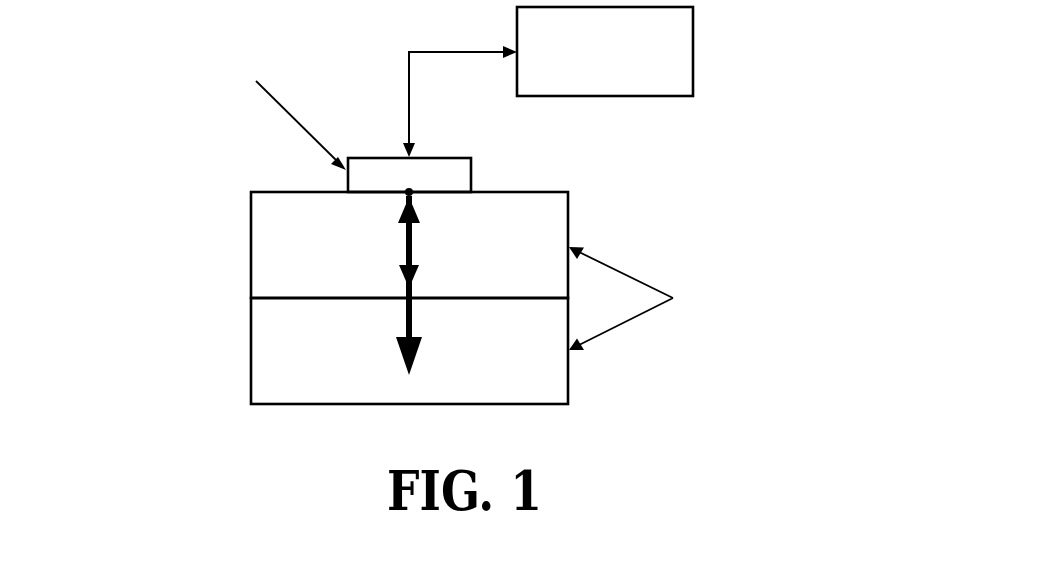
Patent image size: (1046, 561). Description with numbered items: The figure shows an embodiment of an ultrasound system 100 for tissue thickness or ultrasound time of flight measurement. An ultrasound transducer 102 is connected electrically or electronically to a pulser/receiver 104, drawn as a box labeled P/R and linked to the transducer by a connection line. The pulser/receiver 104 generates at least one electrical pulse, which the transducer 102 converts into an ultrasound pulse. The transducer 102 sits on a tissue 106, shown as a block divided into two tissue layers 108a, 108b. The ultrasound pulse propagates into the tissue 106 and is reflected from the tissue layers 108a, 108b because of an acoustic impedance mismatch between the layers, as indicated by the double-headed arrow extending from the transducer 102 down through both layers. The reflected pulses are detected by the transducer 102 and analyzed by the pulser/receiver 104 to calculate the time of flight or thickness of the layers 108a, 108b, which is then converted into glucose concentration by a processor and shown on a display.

The system 100 is at (178, 316).
The ultrasound transducer 102 is at (420, 186).
The pulser/receiver 104 is at (548, 82).
The tissue 106 is at (544, 274).
The tissue layer 108a is at (541, 258).
The tissue layer 108b is at (535, 362).